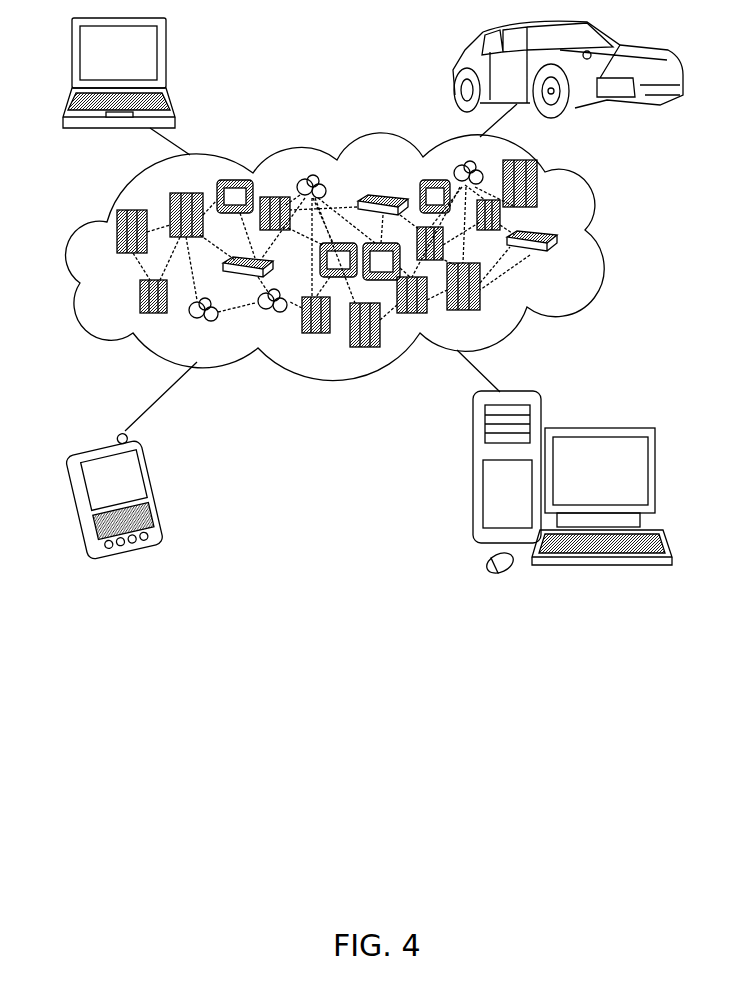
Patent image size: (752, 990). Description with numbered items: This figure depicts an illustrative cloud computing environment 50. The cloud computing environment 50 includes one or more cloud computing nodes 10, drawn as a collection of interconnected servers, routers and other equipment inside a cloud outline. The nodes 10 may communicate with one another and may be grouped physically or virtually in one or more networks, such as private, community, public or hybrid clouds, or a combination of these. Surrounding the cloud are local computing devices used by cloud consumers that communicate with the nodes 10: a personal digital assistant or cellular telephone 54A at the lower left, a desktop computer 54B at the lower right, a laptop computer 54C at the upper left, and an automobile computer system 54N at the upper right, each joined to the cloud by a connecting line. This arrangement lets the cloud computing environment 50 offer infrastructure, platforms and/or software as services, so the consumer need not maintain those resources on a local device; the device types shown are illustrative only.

The cloud computing nodes 10 is at (566, 265).
The cloud computing environment 50 is at (603, 235).
The personal digital assistant or cellular telephone 54A is at (157, 492).
The desktop computer 54B is at (597, 428).
The laptop computer 54C is at (167, 60).
The automobile computer system 54N is at (457, 68).